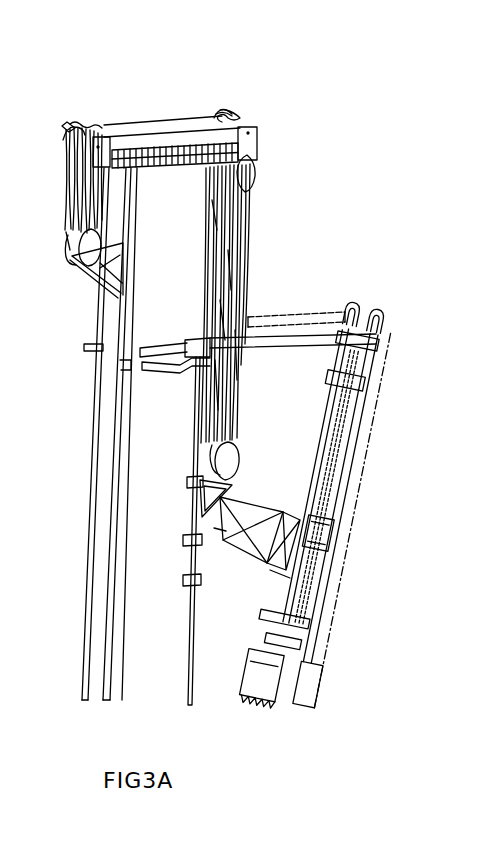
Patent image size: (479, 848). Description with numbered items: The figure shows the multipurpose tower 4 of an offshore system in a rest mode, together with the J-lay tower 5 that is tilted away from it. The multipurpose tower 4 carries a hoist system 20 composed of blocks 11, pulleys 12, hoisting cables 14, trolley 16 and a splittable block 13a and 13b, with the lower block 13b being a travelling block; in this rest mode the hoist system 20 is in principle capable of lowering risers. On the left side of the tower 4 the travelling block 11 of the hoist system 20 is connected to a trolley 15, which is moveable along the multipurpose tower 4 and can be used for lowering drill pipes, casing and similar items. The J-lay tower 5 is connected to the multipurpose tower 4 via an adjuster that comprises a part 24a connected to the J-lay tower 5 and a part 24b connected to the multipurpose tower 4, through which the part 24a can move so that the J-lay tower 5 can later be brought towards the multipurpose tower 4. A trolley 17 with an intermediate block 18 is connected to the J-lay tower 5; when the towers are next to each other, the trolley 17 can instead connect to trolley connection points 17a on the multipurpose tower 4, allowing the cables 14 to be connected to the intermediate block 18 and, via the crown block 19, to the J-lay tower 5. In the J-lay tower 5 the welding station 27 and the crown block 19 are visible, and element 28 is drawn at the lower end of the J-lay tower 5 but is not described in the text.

The hoist system 20 is at (90, 91).
The pulleys 12 is at (70, 128).
The splittable block 13a is at (247, 171).
The hoisting cables 14 is at (245, 240).
The travelling block 11 is at (68, 253).
The trolley 15 is at (97, 278).
The multipurpose tower 4 is at (169, 408).
The part of adjuster connected to multipurpose tower 24b is at (202, 342).
The part of adjuster connected to J-lay tower 24a is at (299, 316).
The crown block 19 is at (382, 314).
The J-lay tower 5 is at (362, 430).
The splittable block (lower, travelling block) 13b is at (229, 458).
The trolley 16 is at (205, 500).
The trolley 17 is at (240, 553).
The trolley connection points 17a is at (185, 580).
The intermediate block 18 is at (300, 533).
The welding station 27 is at (306, 688).
The foot block 28 is at (252, 708).